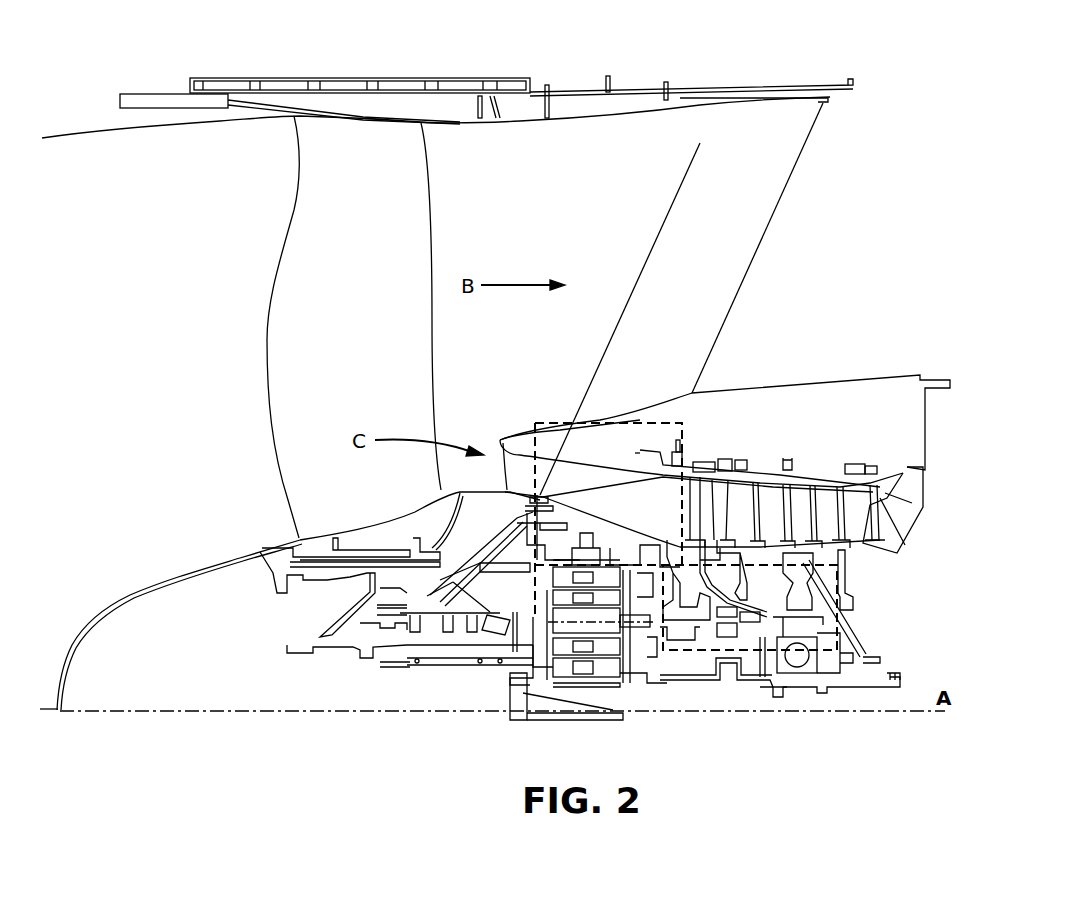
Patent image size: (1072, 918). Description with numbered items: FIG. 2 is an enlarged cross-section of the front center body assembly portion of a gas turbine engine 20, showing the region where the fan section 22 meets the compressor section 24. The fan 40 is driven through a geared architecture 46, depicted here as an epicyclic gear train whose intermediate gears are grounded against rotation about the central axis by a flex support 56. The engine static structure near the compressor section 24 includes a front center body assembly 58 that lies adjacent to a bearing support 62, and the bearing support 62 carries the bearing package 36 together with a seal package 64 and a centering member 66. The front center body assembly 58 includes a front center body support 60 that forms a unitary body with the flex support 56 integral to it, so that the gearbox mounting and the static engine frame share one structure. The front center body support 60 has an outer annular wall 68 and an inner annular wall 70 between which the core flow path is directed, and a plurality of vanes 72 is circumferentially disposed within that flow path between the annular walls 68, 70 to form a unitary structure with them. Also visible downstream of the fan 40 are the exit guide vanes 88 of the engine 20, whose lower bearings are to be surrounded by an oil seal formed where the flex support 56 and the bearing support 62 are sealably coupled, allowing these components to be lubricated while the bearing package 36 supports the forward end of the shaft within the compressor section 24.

The gas turbine engine 20 is at (858, 138).
The fan section 22 is at (545, 72).
The compressor section 24 is at (955, 522).
The bearing package 36 is at (840, 572).
The fan 40 is at (351, 286).
The geared architecture 46 is at (636, 688).
The flex support 56 is at (703, 643).
The front center body assembly 58 is at (680, 445).
The front center body support 60 is at (634, 508).
The bearing support 62 is at (703, 585).
The seal package 64 is at (852, 670).
The centering member 66 is at (763, 630).
The outer annular wall 68 is at (635, 453).
The inner annular wall 70 is at (555, 520).
The vanes 72 is at (563, 470).
The exit guide vanes 88 is at (703, 497).